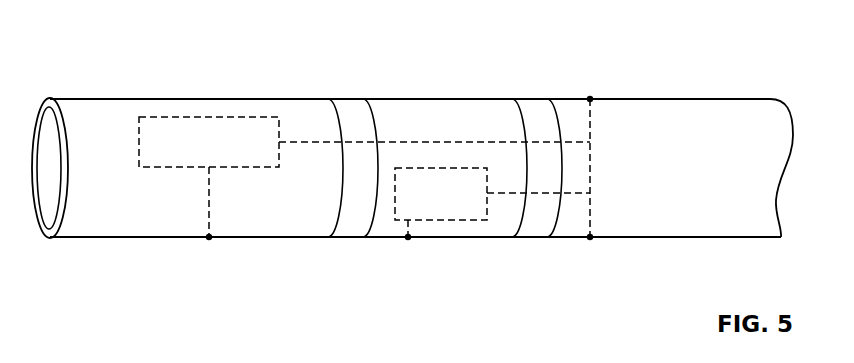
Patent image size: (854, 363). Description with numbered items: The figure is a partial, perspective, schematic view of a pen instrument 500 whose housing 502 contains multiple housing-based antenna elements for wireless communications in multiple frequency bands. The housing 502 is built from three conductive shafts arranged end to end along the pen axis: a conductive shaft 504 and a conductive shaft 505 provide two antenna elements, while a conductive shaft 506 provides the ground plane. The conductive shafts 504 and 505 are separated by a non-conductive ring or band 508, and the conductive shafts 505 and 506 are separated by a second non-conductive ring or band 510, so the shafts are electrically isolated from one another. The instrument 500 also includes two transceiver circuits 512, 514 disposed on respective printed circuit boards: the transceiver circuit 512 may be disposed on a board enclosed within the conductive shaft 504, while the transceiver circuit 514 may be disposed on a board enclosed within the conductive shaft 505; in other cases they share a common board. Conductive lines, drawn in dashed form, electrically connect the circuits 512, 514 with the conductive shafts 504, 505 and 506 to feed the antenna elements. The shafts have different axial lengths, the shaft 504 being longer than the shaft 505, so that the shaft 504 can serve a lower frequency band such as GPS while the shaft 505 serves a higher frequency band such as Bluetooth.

The instrument 500 is at (81, 62).
The housing 502 is at (652, 52).
The conductive shaft 504 is at (207, 99).
The conductive shaft 505 is at (440, 99).
The conductive shaft 506 is at (748, 100).
The non-conductive ring 508 is at (347, 103).
The non-conductive ring 510 is at (523, 99).
The transceiver circuit 512 is at (172, 110).
The transceiver circuit 514 is at (450, 220).